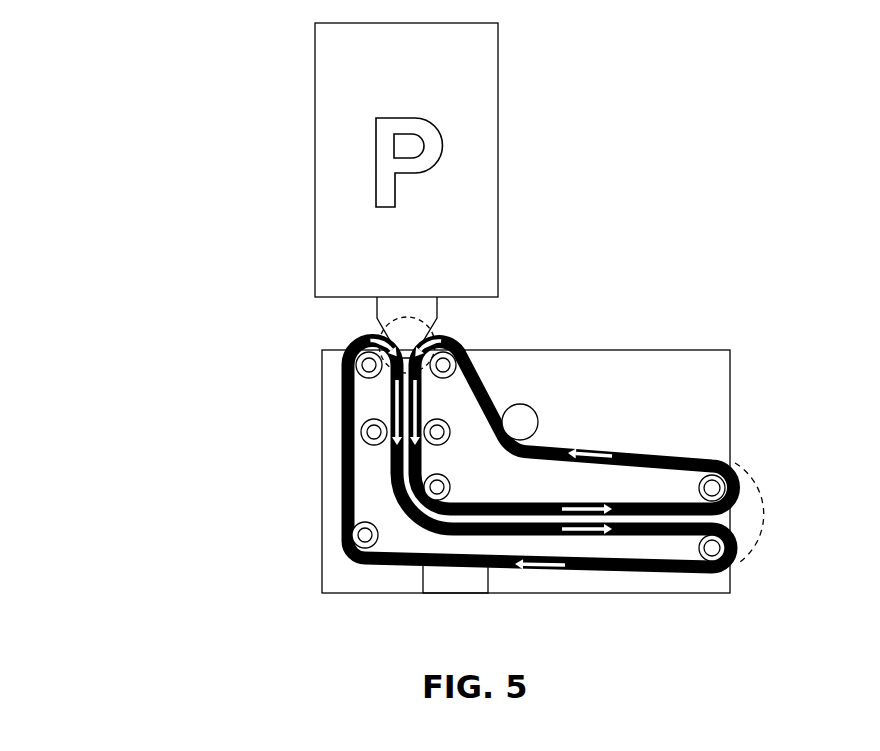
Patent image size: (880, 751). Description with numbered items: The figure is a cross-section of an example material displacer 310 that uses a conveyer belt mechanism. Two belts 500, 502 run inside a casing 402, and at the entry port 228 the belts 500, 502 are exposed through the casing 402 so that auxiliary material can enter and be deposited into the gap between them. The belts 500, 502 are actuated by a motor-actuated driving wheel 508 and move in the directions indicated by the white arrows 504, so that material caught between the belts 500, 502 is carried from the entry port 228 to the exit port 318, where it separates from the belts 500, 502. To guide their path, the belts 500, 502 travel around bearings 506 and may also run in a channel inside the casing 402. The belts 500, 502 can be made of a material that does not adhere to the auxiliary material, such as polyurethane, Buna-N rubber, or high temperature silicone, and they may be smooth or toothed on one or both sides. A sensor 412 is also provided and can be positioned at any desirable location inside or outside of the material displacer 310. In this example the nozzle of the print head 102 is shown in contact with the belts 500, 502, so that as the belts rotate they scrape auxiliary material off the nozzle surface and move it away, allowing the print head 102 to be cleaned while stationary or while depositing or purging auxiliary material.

The print head 102 is at (247, 184).
The entry port 228 is at (372, 329).
The material displacer 310 is at (116, 505).
The exit port 318 is at (760, 498).
The casing 402 is at (650, 365).
The sensor 412 is at (457, 578).
The belt 500 is at (341, 473).
The belt 502 is at (683, 457).
The white arrows 504 is at (580, 536).
The bearings 506 is at (440, 430).
The motor-actuated driving wheel 508 is at (527, 417).